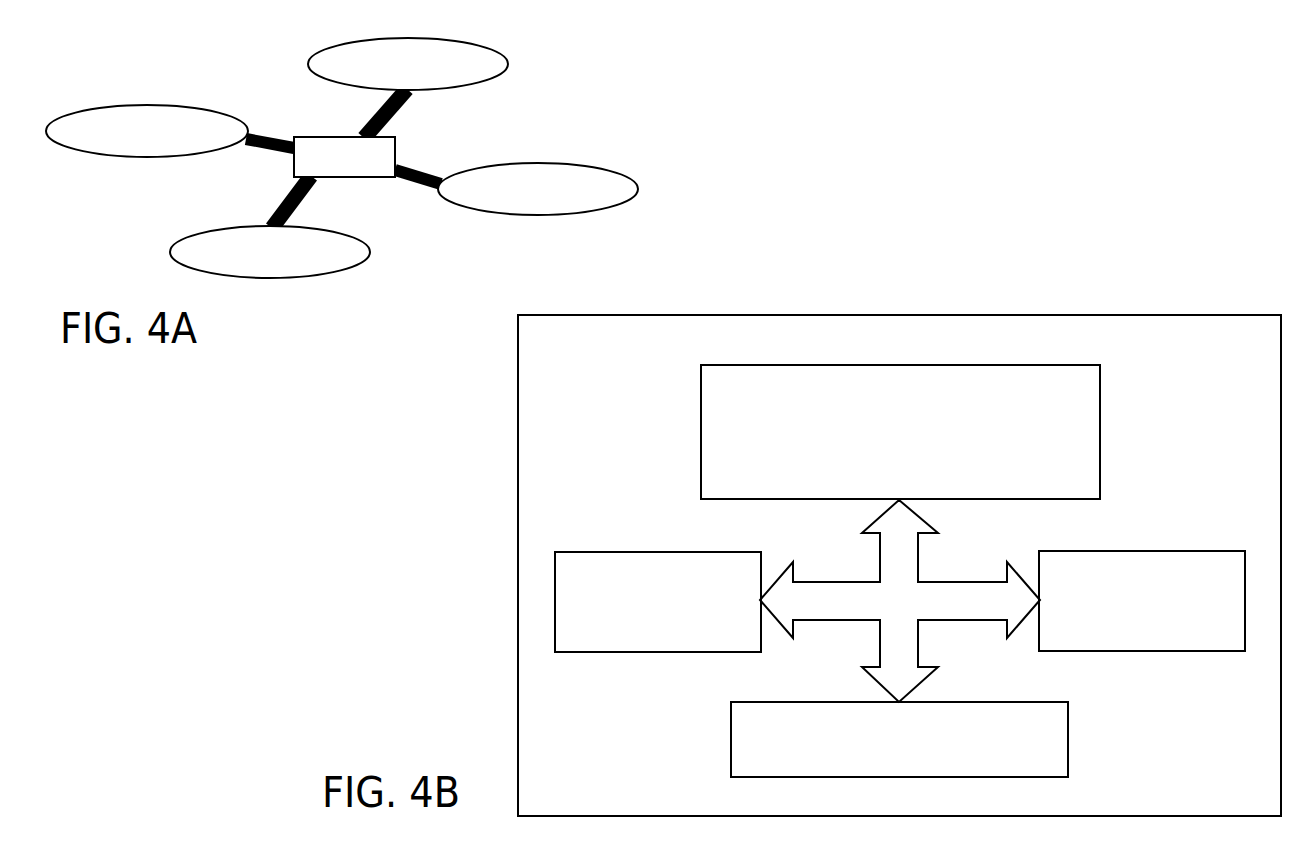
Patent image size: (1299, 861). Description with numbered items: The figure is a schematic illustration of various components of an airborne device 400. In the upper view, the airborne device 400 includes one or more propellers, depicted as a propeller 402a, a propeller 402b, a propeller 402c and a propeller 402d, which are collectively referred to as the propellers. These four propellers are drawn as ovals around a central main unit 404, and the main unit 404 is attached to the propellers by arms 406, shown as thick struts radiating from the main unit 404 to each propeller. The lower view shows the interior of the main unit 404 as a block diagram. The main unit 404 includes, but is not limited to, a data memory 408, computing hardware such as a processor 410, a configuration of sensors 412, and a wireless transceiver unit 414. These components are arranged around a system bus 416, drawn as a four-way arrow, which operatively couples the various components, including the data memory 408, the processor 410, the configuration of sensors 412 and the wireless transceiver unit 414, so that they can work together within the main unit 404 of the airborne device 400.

In FIG. 4A, the airborne device 400 is at (618, 112).
In FIG. 4A, the propeller 402a is at (175, 146).
In FIG. 4A, the propeller 402b is at (436, 79).
In FIG. 4A, the propeller 402c is at (566, 206).
In FIG. 4A, the propeller 402d is at (298, 266).
In FIG. 4A, the main unit 404 is at (365, 170).
In FIG. 4B, the main unit 404 is at (1251, 762).
In FIG. 4A, the arms 406 is at (267, 154).
In FIG. 4B, the data memory 408 is at (678, 631).
In FIG. 4B, the processor 410 is at (1029, 751).
In FIG. 4B, the configuration of sensors 412 is at (1162, 635).
In FIG. 4B, the wireless transceiver unit 414 is at (920, 476).
In FIG. 4B, the system bus 416 is at (917, 612).